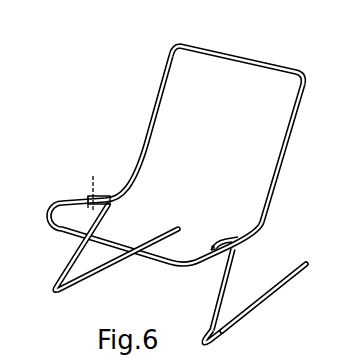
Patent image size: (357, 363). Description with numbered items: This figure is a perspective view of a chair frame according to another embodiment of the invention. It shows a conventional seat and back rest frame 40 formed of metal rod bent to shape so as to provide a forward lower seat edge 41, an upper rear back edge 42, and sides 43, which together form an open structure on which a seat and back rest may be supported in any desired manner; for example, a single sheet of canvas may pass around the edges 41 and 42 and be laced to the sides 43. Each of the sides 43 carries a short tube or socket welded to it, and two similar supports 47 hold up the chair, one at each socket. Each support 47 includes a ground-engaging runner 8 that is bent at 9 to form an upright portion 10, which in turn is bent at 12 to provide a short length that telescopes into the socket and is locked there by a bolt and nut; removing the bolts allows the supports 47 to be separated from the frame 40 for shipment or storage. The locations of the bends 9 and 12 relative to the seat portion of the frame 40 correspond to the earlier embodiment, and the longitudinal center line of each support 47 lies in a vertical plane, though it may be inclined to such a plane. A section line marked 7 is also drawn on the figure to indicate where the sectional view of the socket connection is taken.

The seat and back rest frame 40 is at (190, 159).
The upper rear back edge 42 is at (253, 57).
The sides 43 is at (152, 131).
The forward lower seat edge 41 is at (155, 263).
The section line 7- 7 is at (98, 180).
The support 47 is at (113, 216).
The bend 12 is at (224, 251).
The upright portion 10 is at (222, 289).
The bend 9 is at (209, 333).
The ground-engaging runner 8 is at (253, 309).